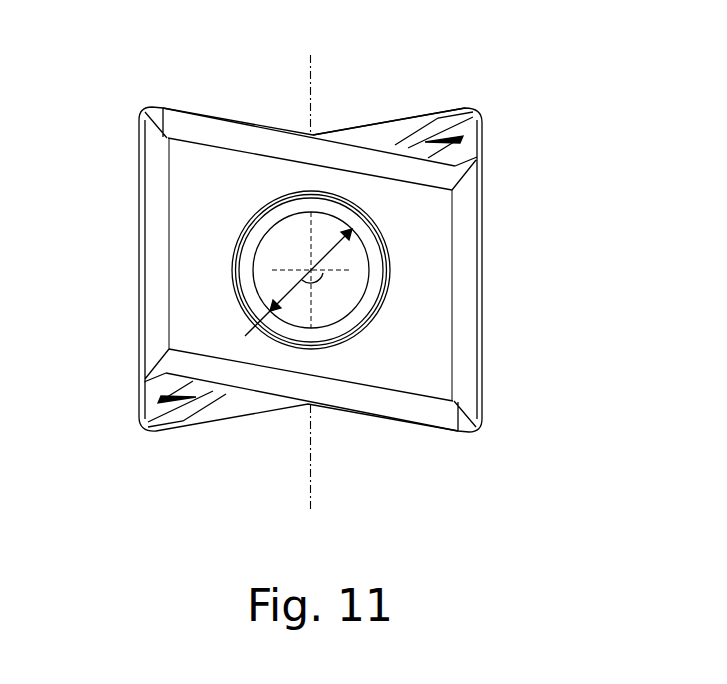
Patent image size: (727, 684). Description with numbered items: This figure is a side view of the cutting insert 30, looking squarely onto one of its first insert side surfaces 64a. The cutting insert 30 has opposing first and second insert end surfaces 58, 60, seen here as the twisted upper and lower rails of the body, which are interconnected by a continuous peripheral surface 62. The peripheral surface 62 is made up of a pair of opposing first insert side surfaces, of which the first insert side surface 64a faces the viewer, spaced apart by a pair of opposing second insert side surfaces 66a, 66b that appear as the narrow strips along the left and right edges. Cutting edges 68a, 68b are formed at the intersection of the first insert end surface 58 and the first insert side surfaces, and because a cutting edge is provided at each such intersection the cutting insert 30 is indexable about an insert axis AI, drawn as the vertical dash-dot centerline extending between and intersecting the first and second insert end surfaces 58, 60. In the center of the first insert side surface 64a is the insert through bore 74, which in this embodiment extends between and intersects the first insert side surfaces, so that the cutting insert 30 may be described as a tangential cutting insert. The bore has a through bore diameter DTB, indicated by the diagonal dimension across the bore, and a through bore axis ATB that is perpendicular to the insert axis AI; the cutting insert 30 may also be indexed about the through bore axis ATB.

The cutting insert 30 is at (484, 97).
The first insert end surface 58 is at (378, 146).
The second insert end surface 60 is at (237, 405).
The peripheral surface 62 is at (428, 304).
The first insert side surface 64a is at (310, 269).
The second insert side surface 66a is at (140, 270).
The second insert side surface 66b is at (483, 283).
The cutting edge 68a is at (237, 124).
The cutting edge 68b is at (408, 120).
The insert through bore 74 is at (311, 270).
The insert axis AI is at (313, 284).
The through bore diameter DTB is at (283, 297).
The through bore axis ATB is at (328, 292).